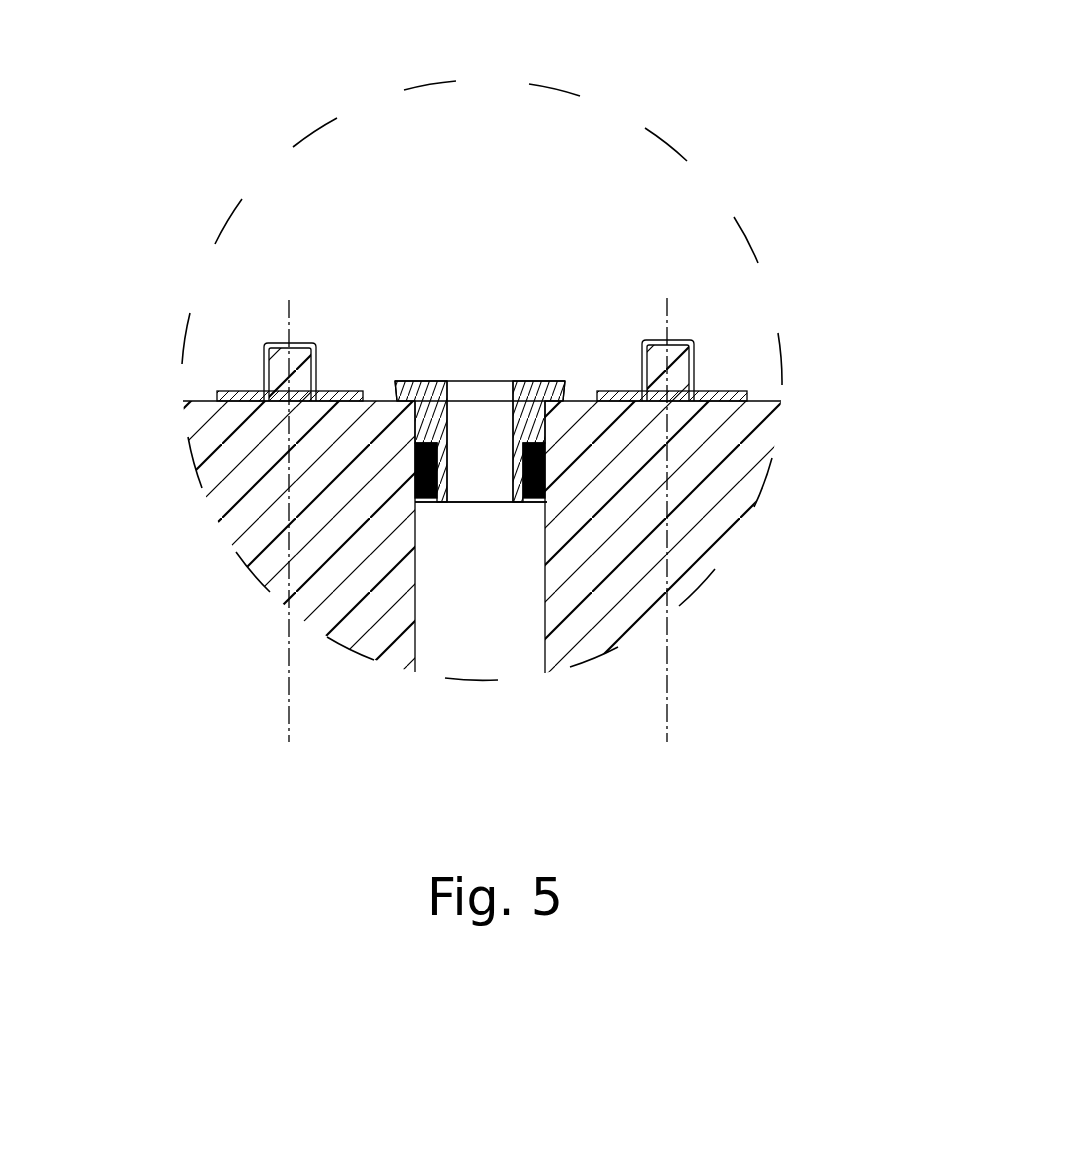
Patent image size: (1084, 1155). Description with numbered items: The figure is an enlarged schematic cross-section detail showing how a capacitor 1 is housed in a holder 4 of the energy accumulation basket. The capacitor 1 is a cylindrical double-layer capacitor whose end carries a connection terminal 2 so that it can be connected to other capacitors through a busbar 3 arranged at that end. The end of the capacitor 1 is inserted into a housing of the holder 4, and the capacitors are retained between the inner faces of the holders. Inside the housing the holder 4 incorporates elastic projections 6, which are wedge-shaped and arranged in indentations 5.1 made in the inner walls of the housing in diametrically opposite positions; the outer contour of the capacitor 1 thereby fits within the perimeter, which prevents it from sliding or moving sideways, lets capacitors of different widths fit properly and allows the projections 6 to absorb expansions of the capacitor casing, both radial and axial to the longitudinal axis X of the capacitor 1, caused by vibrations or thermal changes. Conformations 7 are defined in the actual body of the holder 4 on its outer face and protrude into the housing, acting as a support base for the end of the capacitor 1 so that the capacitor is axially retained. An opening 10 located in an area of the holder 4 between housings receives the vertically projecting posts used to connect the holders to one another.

The capacitor 1 is at (707, 498).
The connection terminal 2 is at (694, 341).
The busbar 3 is at (735, 391).
The holder 4 is at (436, 383).
The indentation 5.1 is at (535, 500).
The elastic projection 6 is at (549, 503).
The conformation 7 is at (564, 381).
The opening 10 is at (496, 400).
The longitudinal axis X is at (673, 580).